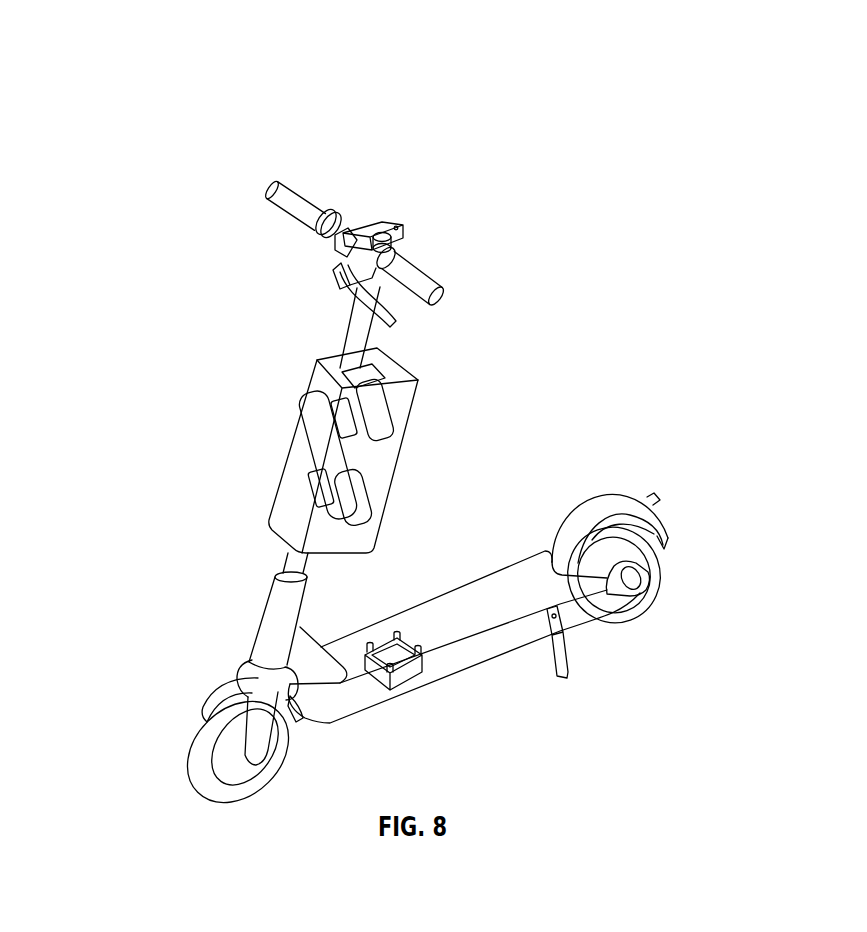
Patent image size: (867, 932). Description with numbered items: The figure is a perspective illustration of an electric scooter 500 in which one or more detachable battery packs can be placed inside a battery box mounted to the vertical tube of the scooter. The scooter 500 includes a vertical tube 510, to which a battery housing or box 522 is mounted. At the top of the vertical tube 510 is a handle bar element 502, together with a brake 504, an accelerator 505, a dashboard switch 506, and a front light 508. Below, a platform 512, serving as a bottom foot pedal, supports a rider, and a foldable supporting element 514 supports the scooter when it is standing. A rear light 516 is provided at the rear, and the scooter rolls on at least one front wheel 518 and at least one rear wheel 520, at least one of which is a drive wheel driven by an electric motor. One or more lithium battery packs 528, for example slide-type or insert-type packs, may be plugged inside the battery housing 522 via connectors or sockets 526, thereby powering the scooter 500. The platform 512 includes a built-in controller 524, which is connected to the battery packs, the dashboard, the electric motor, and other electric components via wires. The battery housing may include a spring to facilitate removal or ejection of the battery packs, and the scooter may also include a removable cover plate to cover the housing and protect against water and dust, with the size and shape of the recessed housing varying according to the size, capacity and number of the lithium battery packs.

The electric scooter 500 is at (160, 70).
The handle bar element 502 is at (272, 185).
The brake 504 is at (393, 327).
The accelerator 505 is at (338, 212).
The dashboard switch 506 is at (395, 223).
The front light 508 is at (352, 262).
The vertical tube 510 is at (340, 350).
The platform 512 is at (542, 553).
The foldable supporting element 514 is at (568, 653).
The rear light 516 is at (660, 502).
The front wheel 518 is at (203, 740).
The rear wheel 520 is at (648, 563).
The battery housing 522 is at (393, 438).
The built-in controller 524 is at (417, 680).
The connectors or sockets 526 is at (320, 465).
The lithium battery packs 528 is at (350, 517).